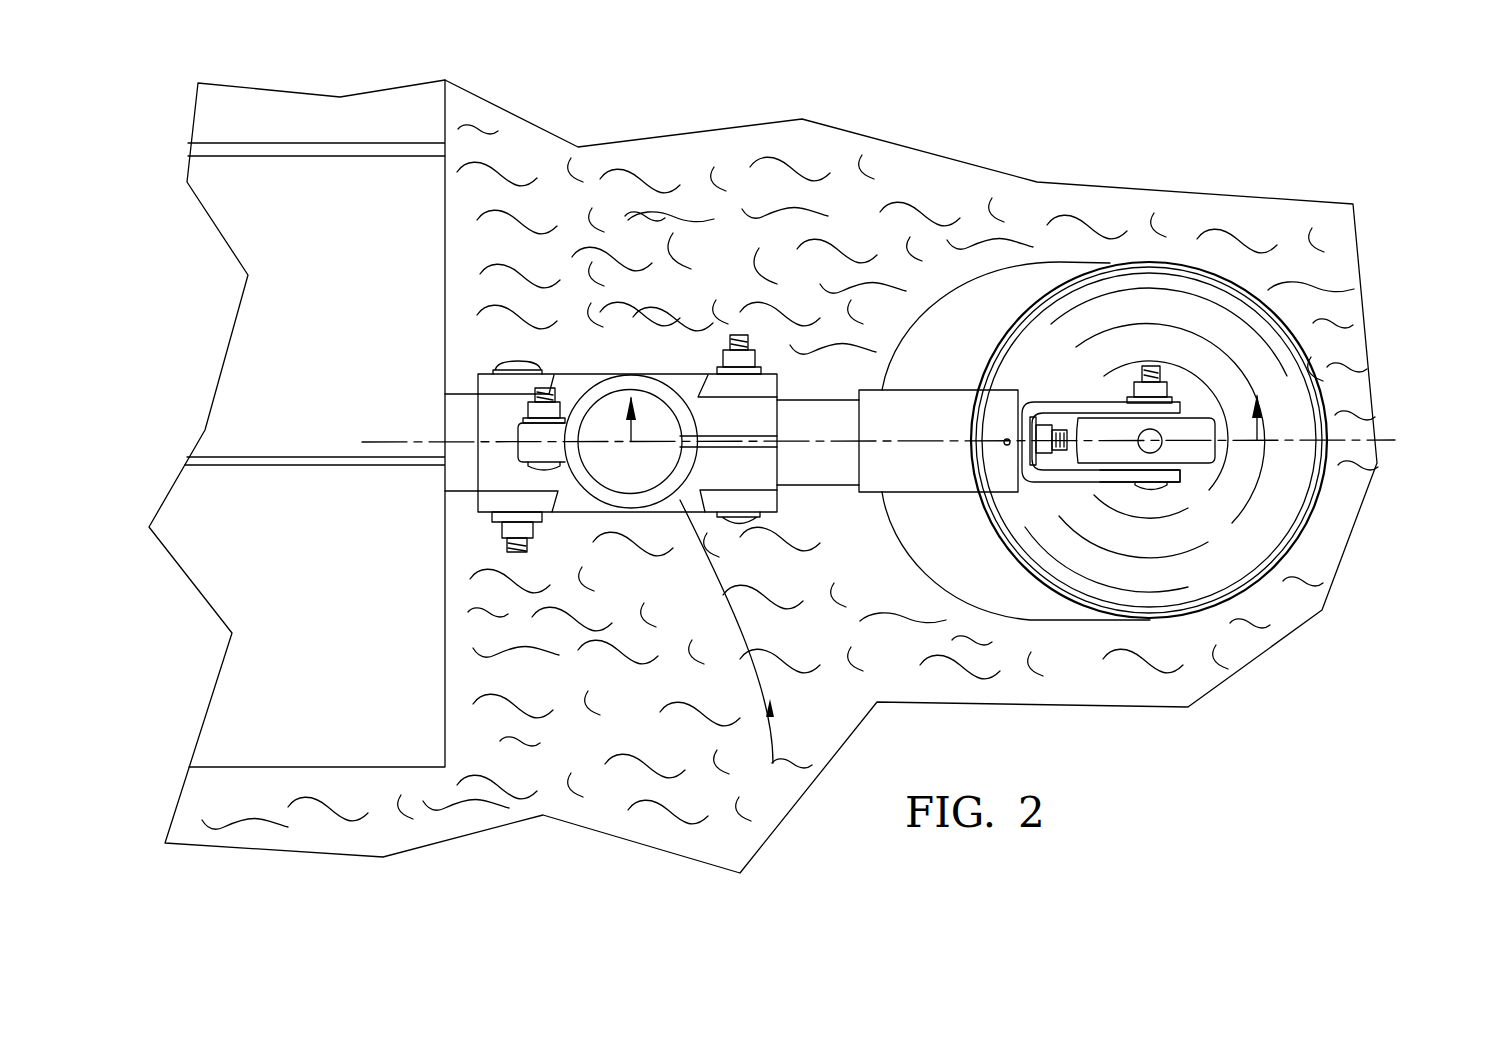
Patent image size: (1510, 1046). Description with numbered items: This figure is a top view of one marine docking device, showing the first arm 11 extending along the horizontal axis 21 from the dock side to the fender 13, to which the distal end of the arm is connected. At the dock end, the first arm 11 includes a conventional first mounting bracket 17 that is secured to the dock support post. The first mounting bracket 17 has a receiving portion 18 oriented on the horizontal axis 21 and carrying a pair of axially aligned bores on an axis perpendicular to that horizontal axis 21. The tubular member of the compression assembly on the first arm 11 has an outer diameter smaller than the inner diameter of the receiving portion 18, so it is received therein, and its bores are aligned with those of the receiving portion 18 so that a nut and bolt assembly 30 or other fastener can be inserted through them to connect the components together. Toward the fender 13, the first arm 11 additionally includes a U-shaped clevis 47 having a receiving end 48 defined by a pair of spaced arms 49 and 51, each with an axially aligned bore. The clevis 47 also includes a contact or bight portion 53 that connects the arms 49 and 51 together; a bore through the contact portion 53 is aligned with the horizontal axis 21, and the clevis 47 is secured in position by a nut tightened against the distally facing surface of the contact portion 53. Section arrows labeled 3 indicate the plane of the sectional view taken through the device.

The first arm 11 is at (851, 508).
The fender 13 is at (1045, 282).
The first mounting bracket 17 is at (773, 765).
The receiving portion 18 is at (777, 365).
The horizontal axis 21 is at (1383, 437).
The nut and bolt assembly 30 is at (743, 533).
The U-shaped clevis 47 is at (1083, 473).
The receiving end 48 is at (1130, 498).
The spaced arm 49 is at (1175, 407).
The spaced arm 51 is at (1178, 471).
The contact portion 53 is at (1005, 490).
The section line 3 is at (946, 412).